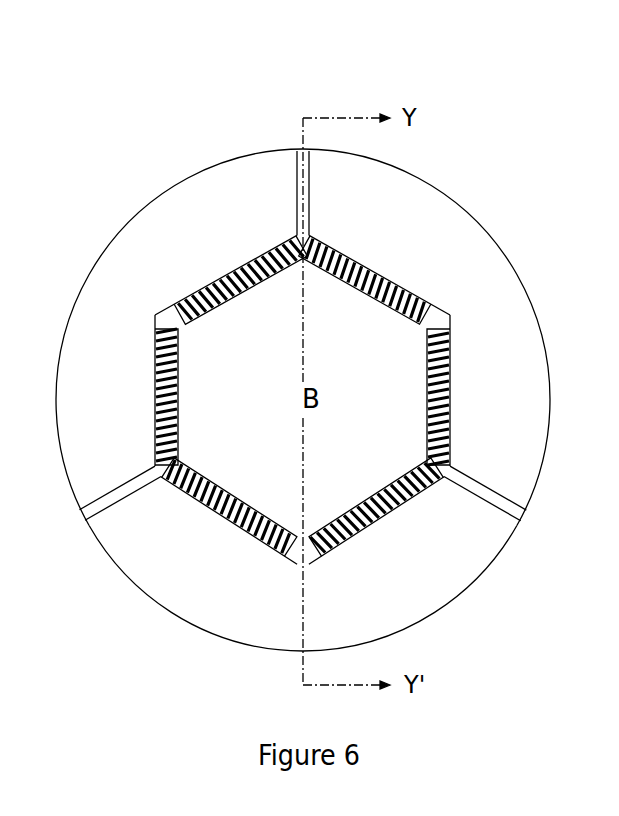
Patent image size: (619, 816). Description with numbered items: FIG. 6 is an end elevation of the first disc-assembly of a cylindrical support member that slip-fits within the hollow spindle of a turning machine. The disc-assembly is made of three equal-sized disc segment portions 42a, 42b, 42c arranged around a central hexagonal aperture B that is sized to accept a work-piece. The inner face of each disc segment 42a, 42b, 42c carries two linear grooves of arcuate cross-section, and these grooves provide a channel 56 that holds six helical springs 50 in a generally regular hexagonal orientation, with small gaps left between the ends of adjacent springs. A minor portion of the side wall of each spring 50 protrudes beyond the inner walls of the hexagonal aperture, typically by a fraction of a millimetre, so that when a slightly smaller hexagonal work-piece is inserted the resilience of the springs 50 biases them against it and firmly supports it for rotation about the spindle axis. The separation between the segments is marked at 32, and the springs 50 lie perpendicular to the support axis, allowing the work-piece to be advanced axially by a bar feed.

The slot 32 is at (303, 100).
The disc segment portion 42a is at (180, 242).
The disc segment portion 42b is at (447, 248).
The disc segment portion 42c is at (425, 543).
The helical spring 50 is at (450, 443).
The channel 56 is at (445, 320).